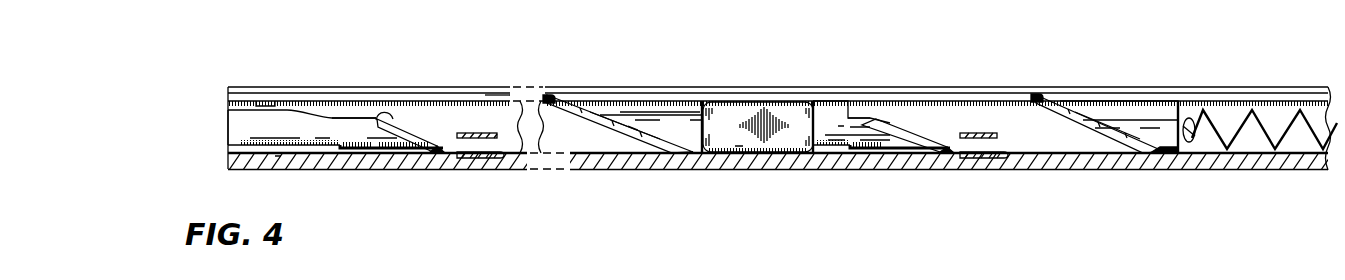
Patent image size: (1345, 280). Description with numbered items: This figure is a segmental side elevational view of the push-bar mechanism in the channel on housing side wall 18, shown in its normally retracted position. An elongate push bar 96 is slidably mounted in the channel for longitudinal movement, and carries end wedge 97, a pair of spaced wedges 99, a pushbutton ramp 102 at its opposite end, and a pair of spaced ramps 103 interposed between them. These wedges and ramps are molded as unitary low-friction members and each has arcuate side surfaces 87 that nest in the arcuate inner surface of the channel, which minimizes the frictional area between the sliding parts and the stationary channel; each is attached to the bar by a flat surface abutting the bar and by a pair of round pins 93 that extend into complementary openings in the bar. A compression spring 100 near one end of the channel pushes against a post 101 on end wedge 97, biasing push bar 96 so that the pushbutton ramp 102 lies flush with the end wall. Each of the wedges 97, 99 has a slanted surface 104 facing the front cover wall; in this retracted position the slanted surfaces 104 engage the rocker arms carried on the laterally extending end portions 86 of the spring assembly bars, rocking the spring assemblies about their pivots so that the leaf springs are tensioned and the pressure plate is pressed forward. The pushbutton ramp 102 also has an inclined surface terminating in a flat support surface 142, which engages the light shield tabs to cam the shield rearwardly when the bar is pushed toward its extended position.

The housing side wall 18 is at (1290, 173).
The end portion 86 is at (560, 98).
The arcuate side surface 87 is at (280, 157).
The round pins 93 is at (374, 116).
The push bar 96 is at (499, 110).
The end wedge 97 is at (1125, 120).
The wedges 99 is at (660, 120).
The compression spring 100 is at (1265, 105).
The post 101 is at (1193, 128).
The pushbutton ramp 102 is at (266, 124).
The ramps 103 is at (830, 118).
The slanted surface 104 is at (617, 133).
The flat support surface 142 is at (287, 107).